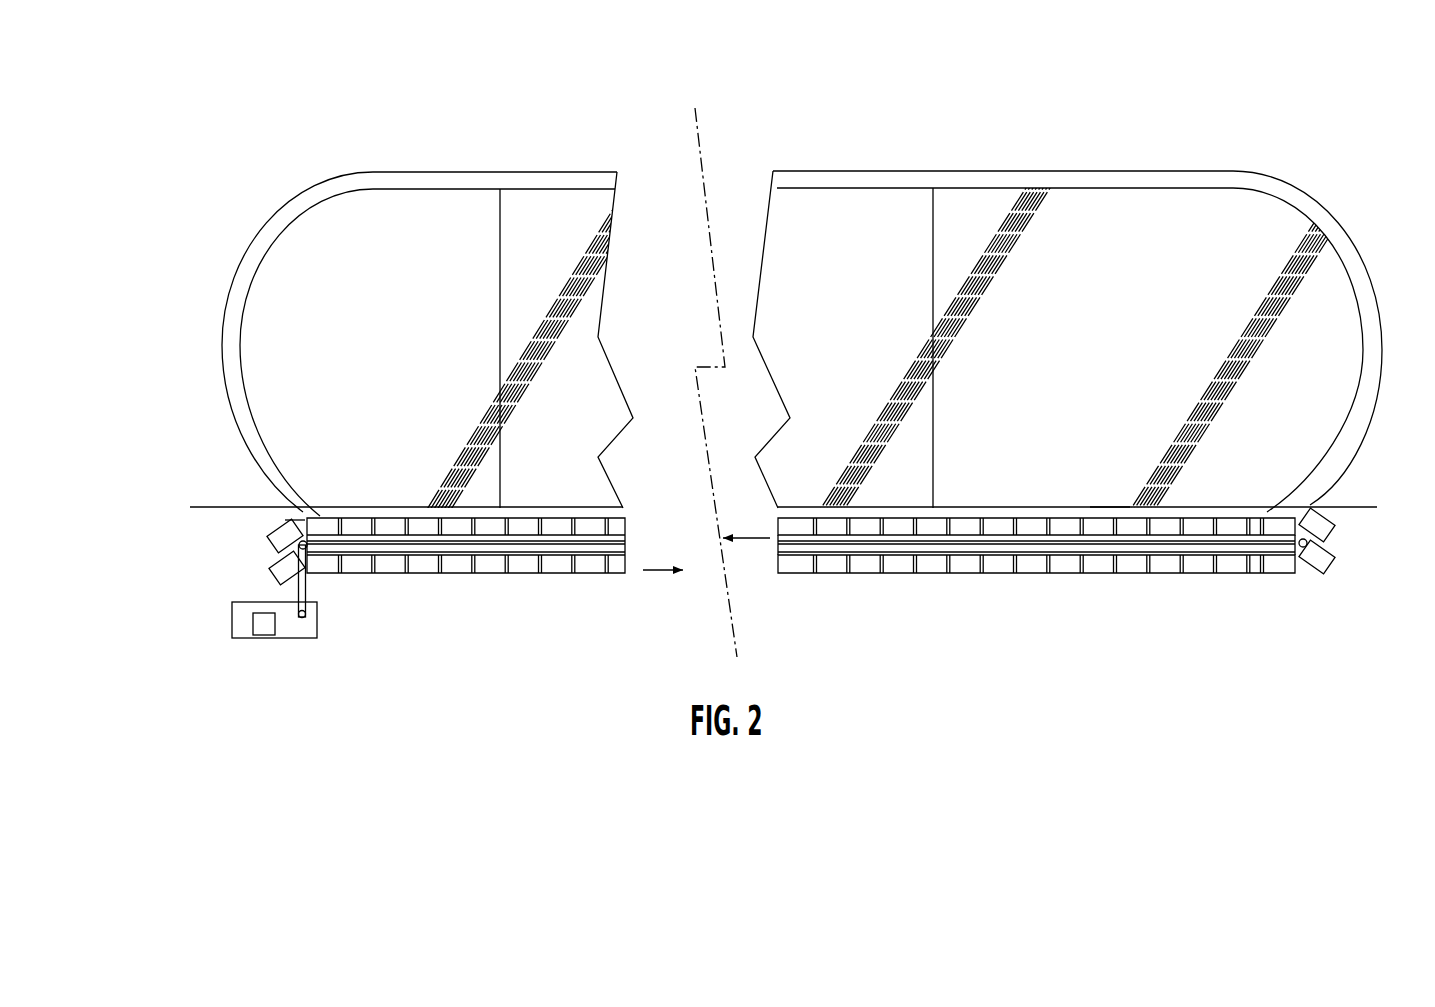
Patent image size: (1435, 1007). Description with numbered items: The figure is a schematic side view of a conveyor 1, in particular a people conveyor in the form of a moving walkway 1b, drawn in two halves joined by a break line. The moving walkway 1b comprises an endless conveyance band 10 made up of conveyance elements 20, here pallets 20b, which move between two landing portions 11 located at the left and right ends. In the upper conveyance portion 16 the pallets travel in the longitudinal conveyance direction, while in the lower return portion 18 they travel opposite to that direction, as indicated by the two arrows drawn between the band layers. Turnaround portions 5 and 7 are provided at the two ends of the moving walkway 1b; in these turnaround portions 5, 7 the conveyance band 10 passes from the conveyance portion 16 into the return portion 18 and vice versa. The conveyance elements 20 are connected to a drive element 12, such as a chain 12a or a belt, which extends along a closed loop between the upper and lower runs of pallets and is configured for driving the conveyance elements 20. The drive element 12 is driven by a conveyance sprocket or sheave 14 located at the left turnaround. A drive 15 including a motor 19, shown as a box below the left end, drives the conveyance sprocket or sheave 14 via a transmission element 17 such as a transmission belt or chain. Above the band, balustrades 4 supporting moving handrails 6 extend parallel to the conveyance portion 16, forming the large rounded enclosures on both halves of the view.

The conveyor 1 is at (404, 335).
The moving walkway 1b is at (258, 186).
The balustrade 4 is at (528, 213).
The turnaround portion 5 is at (238, 562).
The moving handrail 6 is at (1245, 170).
The turnaround portion 7 is at (1360, 531).
The conveyance band 10 is at (982, 613).
The landing portion 11 is at (232, 483).
The drive element 12 is at (801, 523).
The chain 12a is at (801, 542).
The conveyance sprocket or sheave 14 is at (272, 543).
The drive 15 is at (243, 647).
The conveyance portion 16 is at (1098, 503).
The transmission element 17 is at (320, 580).
The return portion 18 is at (1080, 642).
The motor 19 is at (264, 630).
The conveyance element 20 is at (466, 581).
The pallet 20b is at (427, 568).